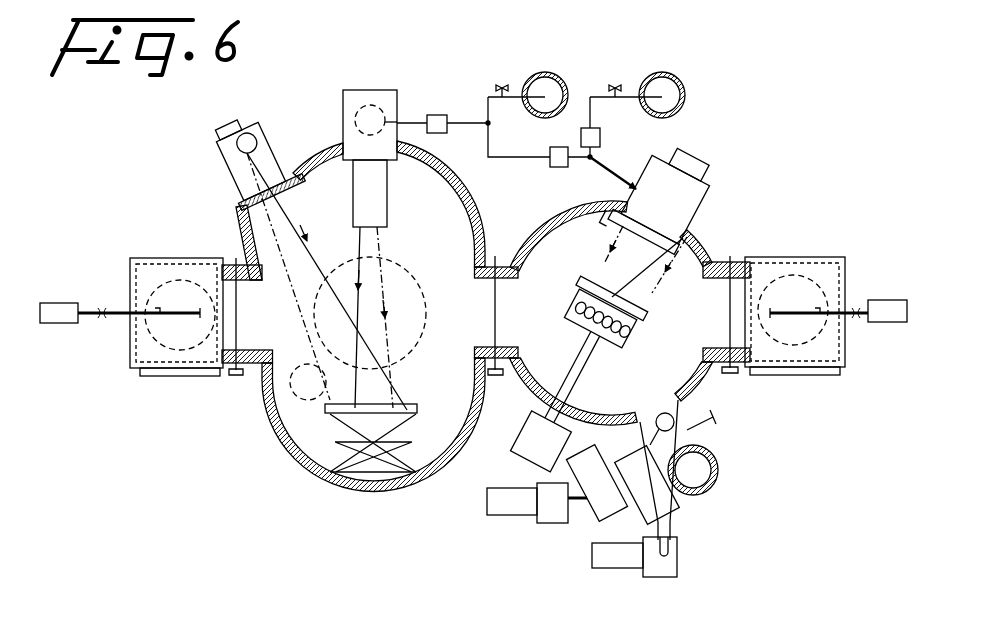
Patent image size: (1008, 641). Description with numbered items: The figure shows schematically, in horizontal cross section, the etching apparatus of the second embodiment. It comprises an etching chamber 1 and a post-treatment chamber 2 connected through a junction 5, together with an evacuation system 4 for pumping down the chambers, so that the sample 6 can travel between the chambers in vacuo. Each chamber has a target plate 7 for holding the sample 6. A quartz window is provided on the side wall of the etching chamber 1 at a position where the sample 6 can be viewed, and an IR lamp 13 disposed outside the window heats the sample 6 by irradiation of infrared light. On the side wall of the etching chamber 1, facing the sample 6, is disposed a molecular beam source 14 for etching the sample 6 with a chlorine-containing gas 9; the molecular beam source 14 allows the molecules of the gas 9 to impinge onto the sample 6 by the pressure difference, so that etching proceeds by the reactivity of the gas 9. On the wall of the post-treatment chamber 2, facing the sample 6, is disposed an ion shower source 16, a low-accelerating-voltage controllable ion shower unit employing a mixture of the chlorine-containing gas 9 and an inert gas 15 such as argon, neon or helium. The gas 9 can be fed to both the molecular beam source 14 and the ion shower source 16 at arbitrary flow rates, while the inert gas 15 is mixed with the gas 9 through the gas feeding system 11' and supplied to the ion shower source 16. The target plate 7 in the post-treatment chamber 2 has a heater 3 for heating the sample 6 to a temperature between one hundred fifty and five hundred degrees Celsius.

The etching chamber 1 is at (287, 447).
The post-treatment chamber 2 is at (703, 255).
The heater 3 is at (582, 322).
The evacuation system 4 is at (311, 349).
The junction 5 is at (450, 455).
The sample 6 is at (683, 238).
The target plate 7 is at (357, 405).
The chlorine-containing gas 9 is at (557, 75).
The gas feeding system 11' is at (624, 127).
The IR lamp 13 is at (233, 157).
The molecular beam source 14 is at (347, 110).
The inert gas 15 is at (672, 75).
The ion shower source 16 is at (703, 186).